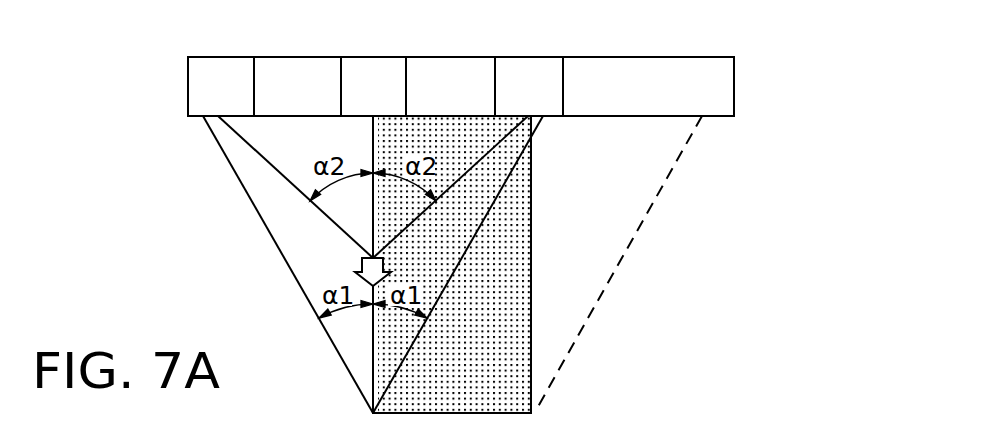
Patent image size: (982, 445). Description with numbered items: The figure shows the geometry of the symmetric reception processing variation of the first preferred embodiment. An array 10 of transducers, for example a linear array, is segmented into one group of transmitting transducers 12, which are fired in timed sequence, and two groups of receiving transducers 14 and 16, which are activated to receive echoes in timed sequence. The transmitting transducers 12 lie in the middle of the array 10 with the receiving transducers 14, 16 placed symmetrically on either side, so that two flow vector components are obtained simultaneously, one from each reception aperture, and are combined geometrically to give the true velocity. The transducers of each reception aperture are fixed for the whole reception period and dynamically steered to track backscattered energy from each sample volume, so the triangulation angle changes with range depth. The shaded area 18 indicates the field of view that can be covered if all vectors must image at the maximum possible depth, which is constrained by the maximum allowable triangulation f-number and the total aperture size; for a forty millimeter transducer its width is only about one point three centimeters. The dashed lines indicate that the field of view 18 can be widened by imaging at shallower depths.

The array 10 is at (755, 97).
The transmitting transducers 12 is at (376, 57).
The receiving transducers 14 is at (218, 57).
The receiving transducers 16 is at (535, 57).
The shaded area 18 is at (510, 382).